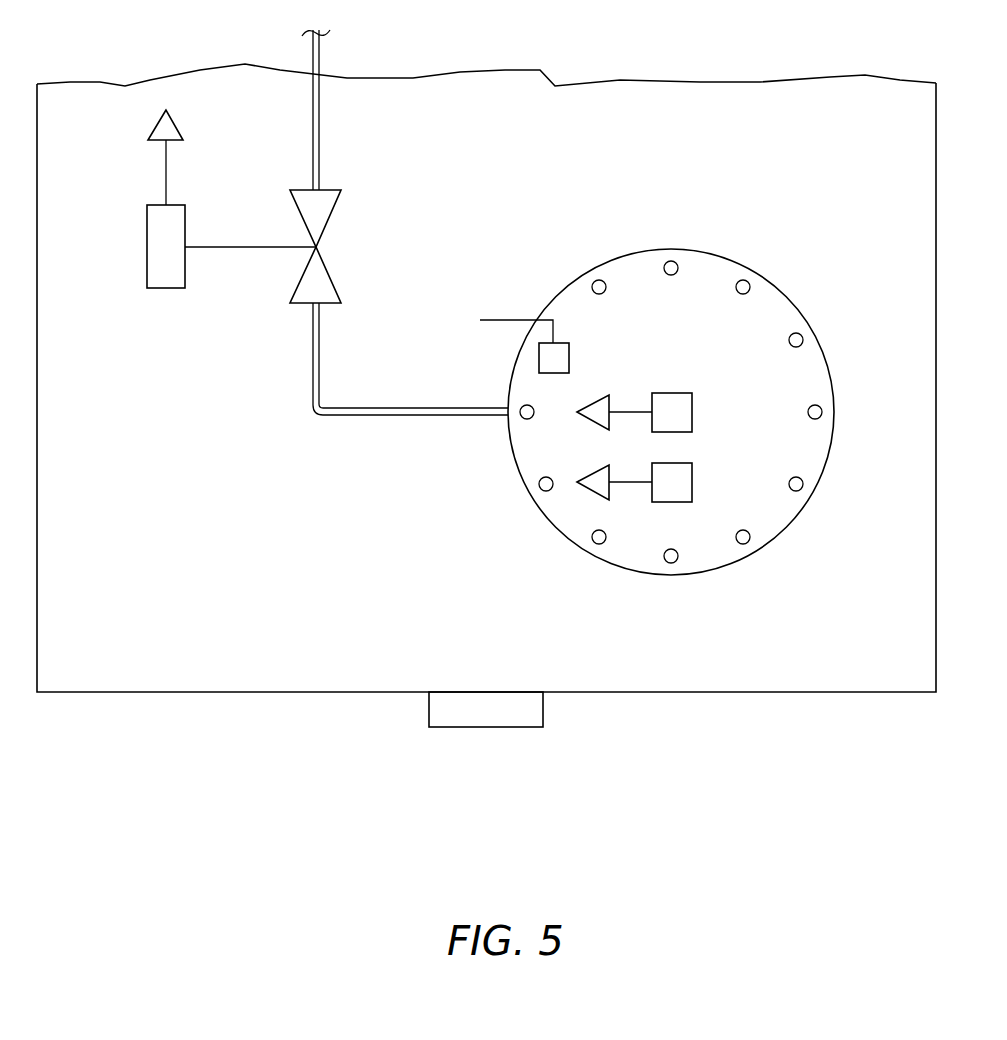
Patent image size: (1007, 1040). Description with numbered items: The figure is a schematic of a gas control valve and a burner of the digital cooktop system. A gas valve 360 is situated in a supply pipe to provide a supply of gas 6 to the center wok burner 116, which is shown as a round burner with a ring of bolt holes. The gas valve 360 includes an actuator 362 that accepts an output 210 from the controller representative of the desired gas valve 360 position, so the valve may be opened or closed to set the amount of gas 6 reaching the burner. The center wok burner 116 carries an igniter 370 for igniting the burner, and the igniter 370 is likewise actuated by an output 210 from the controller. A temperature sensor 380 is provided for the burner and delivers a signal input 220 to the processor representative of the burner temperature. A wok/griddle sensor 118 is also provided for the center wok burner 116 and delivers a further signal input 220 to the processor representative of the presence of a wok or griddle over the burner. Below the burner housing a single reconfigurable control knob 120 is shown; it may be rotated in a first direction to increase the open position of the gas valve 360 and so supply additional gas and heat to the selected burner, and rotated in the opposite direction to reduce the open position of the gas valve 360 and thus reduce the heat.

The gas 6 is at (320, 52).
The center wok burner 116 is at (806, 306).
The wok/griddle sensor 118 is at (692, 482).
The control knob 120 is at (502, 738).
The output 210 is at (164, 168).
The signal input 220 is at (627, 412).
The gas valve 360 is at (325, 265).
The actuator 362 is at (160, 290).
The igniter 370 is at (570, 358).
The temperature sensor 380 is at (683, 393).